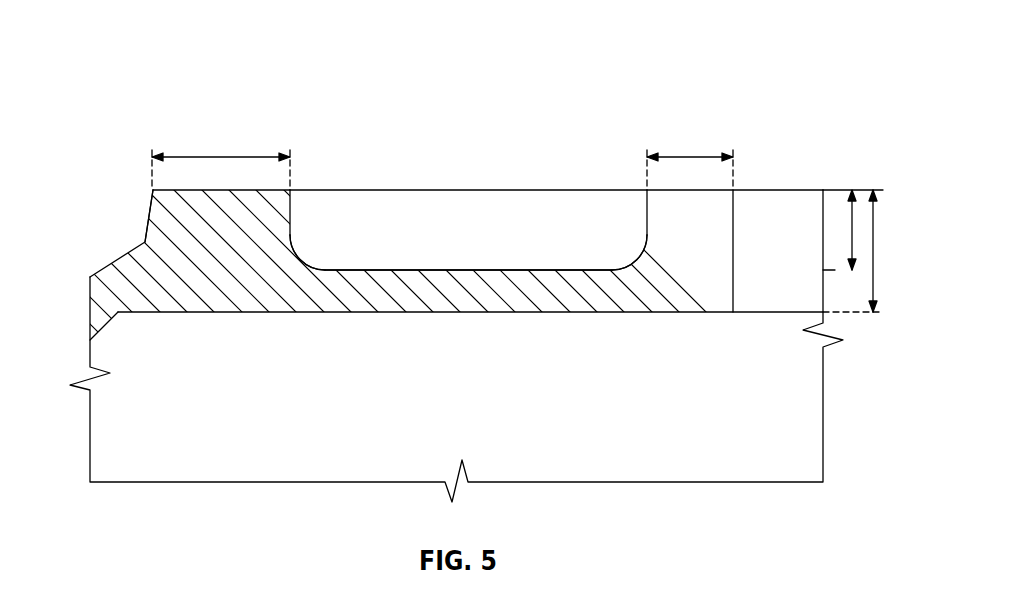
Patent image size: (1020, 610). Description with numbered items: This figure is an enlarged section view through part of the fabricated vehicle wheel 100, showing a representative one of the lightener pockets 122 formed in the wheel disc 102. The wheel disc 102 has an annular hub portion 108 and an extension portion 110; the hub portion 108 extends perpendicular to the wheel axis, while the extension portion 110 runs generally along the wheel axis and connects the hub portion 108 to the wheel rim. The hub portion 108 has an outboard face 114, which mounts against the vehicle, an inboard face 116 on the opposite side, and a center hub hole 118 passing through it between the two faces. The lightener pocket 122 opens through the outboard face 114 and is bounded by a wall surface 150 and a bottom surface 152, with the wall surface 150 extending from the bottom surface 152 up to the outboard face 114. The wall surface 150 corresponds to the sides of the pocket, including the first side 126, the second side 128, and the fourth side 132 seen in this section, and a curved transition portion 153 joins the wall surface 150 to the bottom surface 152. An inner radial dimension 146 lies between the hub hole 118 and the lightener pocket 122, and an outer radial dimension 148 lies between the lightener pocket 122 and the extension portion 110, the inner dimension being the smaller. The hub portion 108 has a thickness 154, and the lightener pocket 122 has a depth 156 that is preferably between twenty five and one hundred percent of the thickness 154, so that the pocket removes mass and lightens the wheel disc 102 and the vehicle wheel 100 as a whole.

The fabricated vehicle wheel 100 is at (185, 63).
The wheel disc 102 is at (97, 269).
The hub portion 108 is at (155, 205).
The extension portion 110 is at (107, 297).
The outboard face 114 is at (203, 194).
The inboard face 116 is at (198, 313).
The center hub hole 118 is at (771, 284).
The lightener pocket 122 is at (395, 190).
The first side 126 is at (647, 210).
The second side 128 is at (290, 213).
The fourth side 132 is at (468, 218).
The inner radial dimension 146 is at (697, 157).
The outer radial dimension 148 is at (205, 157).
The wall surface 150 is at (647, 228).
The bottom surface 152 is at (483, 270).
The transition portion 153 is at (318, 268).
The thickness 154 is at (875, 235).
The depth 156 is at (850, 215).